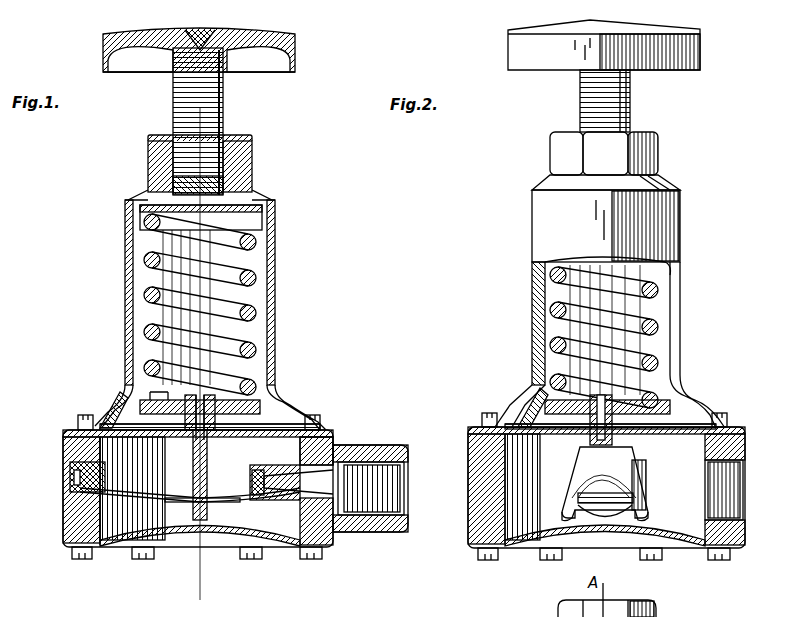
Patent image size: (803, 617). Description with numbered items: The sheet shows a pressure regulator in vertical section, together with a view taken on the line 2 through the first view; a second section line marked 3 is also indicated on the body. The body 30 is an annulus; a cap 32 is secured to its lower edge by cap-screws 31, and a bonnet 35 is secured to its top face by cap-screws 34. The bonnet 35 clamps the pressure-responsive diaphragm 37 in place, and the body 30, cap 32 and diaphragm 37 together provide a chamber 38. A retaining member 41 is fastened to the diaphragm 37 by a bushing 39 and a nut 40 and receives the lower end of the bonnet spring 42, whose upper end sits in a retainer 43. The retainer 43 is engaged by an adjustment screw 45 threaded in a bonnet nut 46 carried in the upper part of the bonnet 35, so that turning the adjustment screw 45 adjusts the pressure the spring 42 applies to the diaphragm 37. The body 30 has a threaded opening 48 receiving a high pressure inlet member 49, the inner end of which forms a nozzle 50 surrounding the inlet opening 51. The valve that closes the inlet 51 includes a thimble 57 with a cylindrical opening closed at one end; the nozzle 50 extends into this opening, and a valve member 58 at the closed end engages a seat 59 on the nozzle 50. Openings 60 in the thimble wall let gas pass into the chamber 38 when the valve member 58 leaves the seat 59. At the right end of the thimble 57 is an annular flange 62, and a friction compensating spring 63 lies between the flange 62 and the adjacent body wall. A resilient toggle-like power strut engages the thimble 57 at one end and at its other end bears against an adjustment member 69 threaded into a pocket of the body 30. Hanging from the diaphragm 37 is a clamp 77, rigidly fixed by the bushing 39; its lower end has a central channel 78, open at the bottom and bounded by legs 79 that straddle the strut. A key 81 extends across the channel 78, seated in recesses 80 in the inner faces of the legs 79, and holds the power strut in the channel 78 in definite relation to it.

In FIG. 1, the section line 2— 2 is at (226, 108).
In FIG. 1, the section line 3- 3 is at (335, 437).
In FIG. 1, the body 30 is at (63, 514).
In FIG. 2, the body 30 is at (468, 528).
In FIG. 1, the cap-screws 31 is at (82, 560).
In FIG. 2, the cap-screws 31 is at (492, 560).
In FIG. 1, the cap 32 is at (142, 560).
In FIG. 2, the cap 32 is at (546, 560).
In FIG. 1, the cap-screws 34 is at (325, 420).
In FIG. 2, the cap-screws 34 is at (733, 422).
In FIG. 1, the bonnet 35 is at (279, 393).
In FIG. 1, the diaphragm 37 is at (118, 404).
In FIG. 2, the diaphragm 37 is at (518, 406).
In FIG. 1, the chamber 38 is at (132, 488).
In FIG. 1, the bushing 39 is at (194, 466).
In FIG. 1, the nut 40 is at (258, 382).
In FIG. 2, the nut 40 is at (688, 394).
In FIG. 1, the retaining member 41 is at (280, 402).
In FIG. 2, the retaining member 41 is at (692, 408).
In FIG. 1, the bonnet spring 42 is at (262, 306).
In FIG. 2, the bonnet spring 42 is at (662, 328).
In FIG. 1, the retainer 43 is at (276, 220).
In FIG. 1, the adjustment screw 45 is at (254, 151).
In FIG. 1, the bonnet nut 46 is at (148, 173).
In FIG. 1, the threaded opening 48 is at (336, 533).
In FIG. 1, the high pressure inlet member 49 is at (400, 449).
In FIG. 1, the nozzle 50 is at (268, 505).
In FIG. 1, the inlet opening 51 is at (341, 441).
In FIG. 1, the thimble 57 is at (265, 503).
In FIG. 1, the valve member 58 is at (250, 502).
In FIG. 1, the seat 59 is at (252, 480).
In FIG. 1, the openings 60 is at (266, 470).
In FIG. 1, the annular flange 62 is at (300, 470).
In FIG. 1, the friction compensating spring 63 is at (290, 520).
In FIG. 1, the adjustment member 69 is at (85, 460).
In FIG. 2, the clamp 77 is at (632, 482).
In FIG. 2, the central channel 78 is at (650, 530).
In FIG. 2, the legs 79 is at (568, 516).
In FIG. 2, the recesses 80 is at (578, 500).
In FIG. 2, the key 81 is at (606, 528).